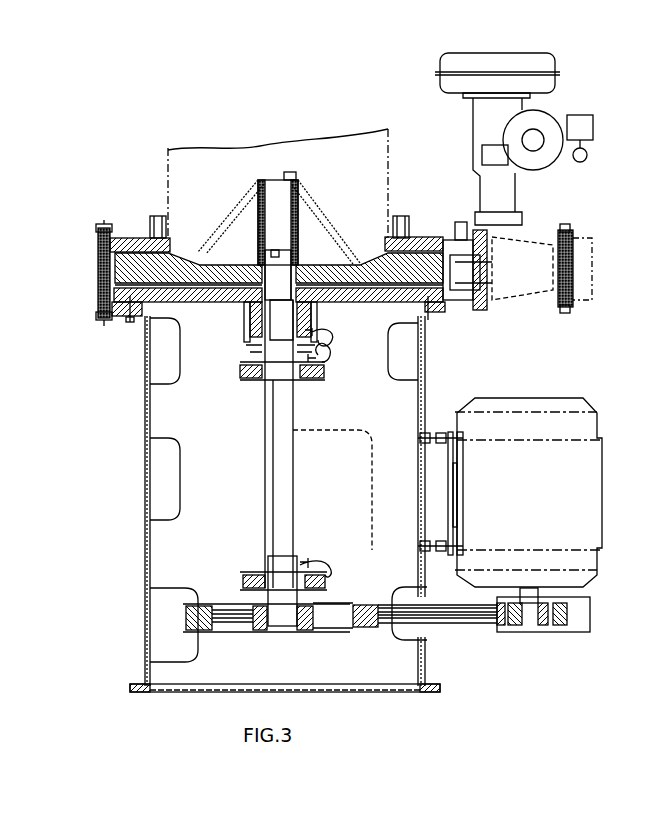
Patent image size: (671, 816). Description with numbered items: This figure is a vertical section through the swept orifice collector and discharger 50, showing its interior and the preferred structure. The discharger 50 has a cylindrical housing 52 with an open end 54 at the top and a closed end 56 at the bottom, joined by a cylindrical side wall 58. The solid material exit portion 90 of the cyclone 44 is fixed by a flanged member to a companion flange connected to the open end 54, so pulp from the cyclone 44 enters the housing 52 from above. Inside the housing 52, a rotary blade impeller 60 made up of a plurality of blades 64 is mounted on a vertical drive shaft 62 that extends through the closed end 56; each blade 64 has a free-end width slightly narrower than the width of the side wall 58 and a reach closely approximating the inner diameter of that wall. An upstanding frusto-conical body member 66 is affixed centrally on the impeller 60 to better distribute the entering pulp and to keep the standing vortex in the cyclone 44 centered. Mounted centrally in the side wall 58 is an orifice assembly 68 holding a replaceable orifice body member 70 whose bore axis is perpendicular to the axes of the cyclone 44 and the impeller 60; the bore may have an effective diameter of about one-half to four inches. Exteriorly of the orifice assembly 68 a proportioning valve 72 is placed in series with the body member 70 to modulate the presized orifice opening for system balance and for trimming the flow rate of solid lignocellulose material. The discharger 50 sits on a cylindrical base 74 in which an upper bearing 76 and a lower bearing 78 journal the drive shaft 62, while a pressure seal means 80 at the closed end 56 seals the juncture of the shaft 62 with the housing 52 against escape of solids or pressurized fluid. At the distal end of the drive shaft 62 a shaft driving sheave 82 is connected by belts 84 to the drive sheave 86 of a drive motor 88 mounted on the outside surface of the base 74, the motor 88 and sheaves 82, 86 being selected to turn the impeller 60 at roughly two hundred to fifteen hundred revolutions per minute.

The cyclone 44 is at (392, 147).
The swept orifice collector and discharger 50 is at (114, 419).
The cylindrical housing 52 is at (133, 206).
The open end 54 is at (178, 238).
The closed end 56 is at (121, 316).
The cylindrical side wall 58 is at (114, 268).
The rotary blade impeller 60 is at (320, 263).
The vertical drive shaft 62 is at (298, 422).
The blade 64 is at (179, 265).
The frusto-conical body member 66 is at (305, 192).
The orifice assembly 68 is at (480, 302).
The replaceable orifice body member 70 is at (488, 266).
The proportioning valve 72 is at (530, 305).
The cylindrical base 74 is at (143, 568).
The upper bearing 76 is at (326, 372).
The lower bearing 78 is at (326, 590).
The pressure seal means 80 is at (248, 328).
The shaft driving sheave 82 is at (236, 622).
The belts 84 is at (392, 623).
The drive sheave 86 is at (545, 622).
The drive motor 88 is at (602, 476).
The solid material exit portion 90 is at (170, 193).